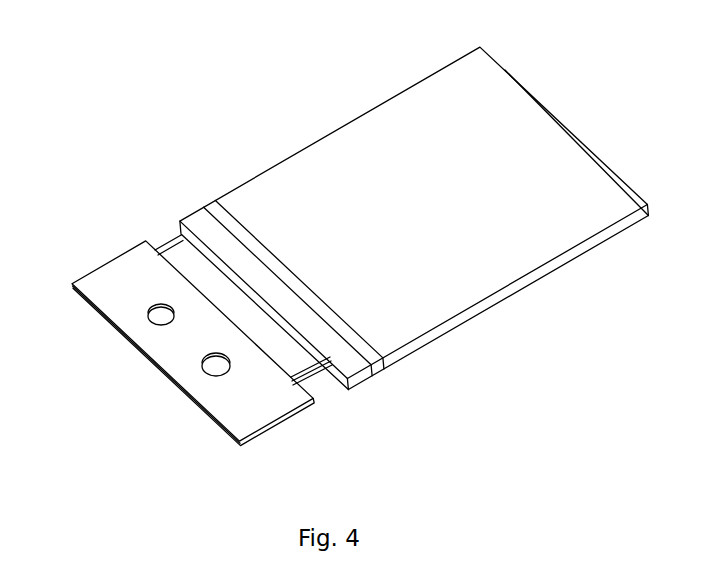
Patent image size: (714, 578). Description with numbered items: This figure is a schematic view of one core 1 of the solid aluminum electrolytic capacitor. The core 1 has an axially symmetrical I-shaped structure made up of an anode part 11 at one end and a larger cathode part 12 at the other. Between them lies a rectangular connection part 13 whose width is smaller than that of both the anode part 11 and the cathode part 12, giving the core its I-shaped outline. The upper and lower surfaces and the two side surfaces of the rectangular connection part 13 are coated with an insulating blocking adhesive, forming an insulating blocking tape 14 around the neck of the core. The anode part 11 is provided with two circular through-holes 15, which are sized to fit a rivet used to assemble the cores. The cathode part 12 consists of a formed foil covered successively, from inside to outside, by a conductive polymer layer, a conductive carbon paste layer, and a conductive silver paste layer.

The core 1 is at (140, 85).
The anode part 11 is at (127, 288).
The cathode part 12 is at (355, 197).
The rectangular connection part 13 is at (293, 363).
The insulating blocking tape 14 is at (170, 243).
The circular through-holes 15 is at (153, 325).